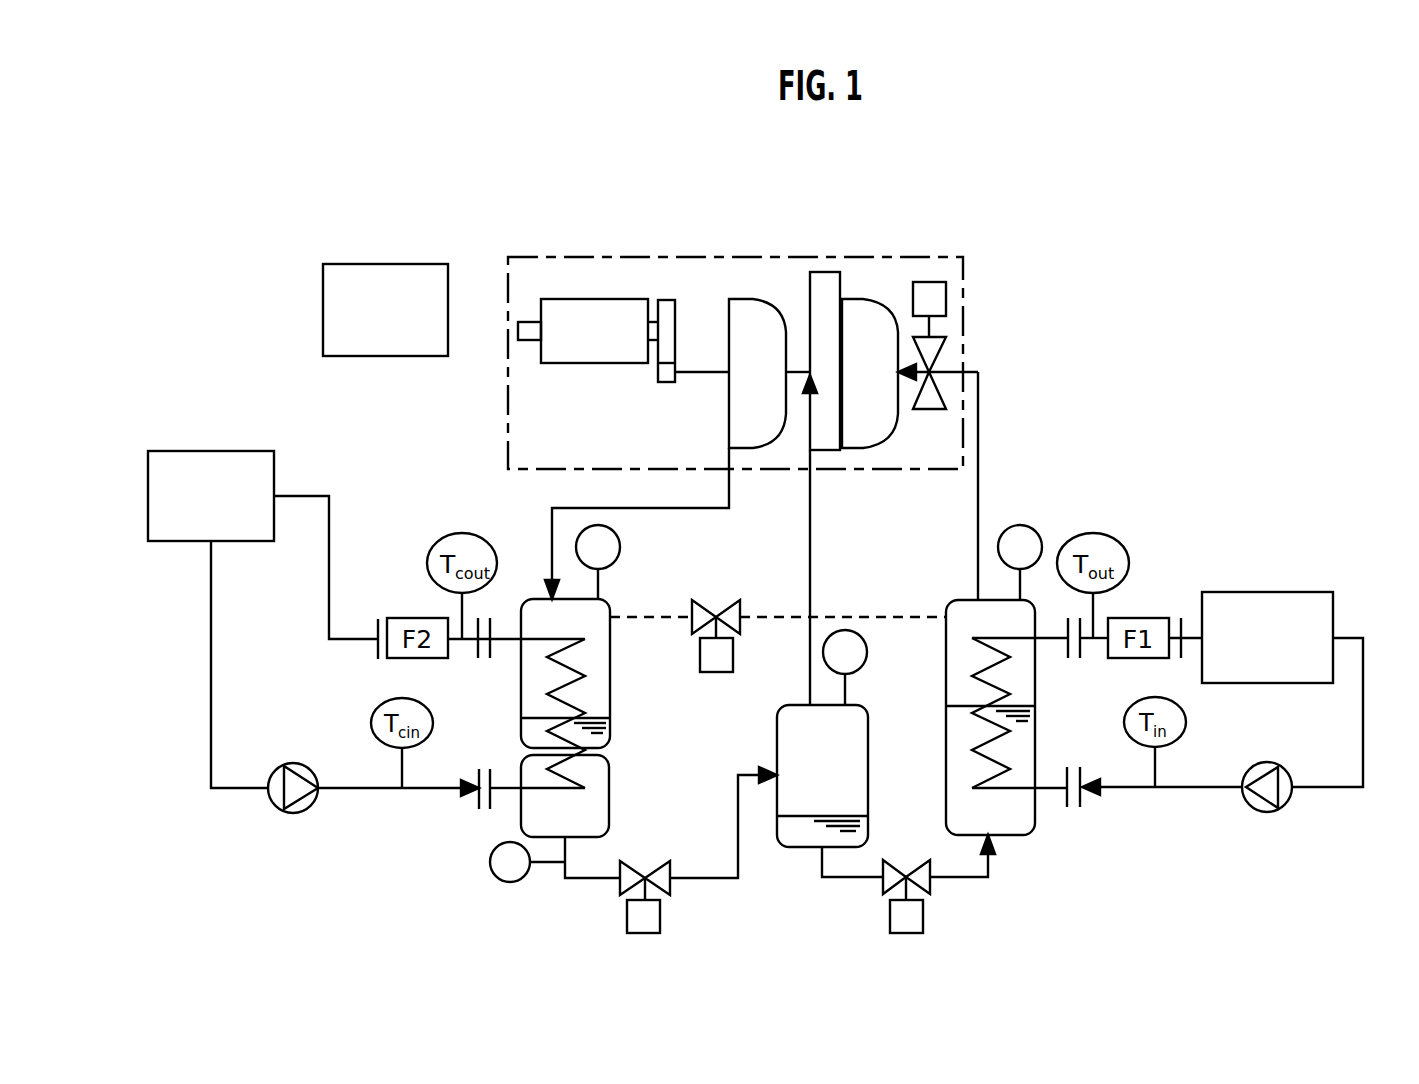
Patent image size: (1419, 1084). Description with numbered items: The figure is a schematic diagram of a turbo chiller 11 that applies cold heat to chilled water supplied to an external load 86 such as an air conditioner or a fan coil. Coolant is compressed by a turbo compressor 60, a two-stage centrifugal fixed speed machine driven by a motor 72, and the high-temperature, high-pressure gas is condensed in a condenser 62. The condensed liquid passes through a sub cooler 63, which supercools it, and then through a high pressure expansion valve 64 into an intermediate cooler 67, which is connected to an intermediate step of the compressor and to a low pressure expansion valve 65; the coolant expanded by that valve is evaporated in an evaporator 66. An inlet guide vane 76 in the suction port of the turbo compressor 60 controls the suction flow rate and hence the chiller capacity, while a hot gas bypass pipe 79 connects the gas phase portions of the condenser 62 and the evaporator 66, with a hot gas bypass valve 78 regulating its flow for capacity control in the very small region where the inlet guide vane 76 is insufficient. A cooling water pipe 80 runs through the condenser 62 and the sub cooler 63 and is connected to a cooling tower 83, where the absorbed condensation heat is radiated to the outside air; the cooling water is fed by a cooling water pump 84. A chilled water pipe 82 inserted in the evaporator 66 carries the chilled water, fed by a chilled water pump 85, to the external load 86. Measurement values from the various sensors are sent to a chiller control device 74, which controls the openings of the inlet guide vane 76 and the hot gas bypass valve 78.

The turbo chiller 11 is at (222, 262).
The turbo compressor 60 is at (996, 254).
The condenser 62 is at (533, 598).
The sub cooler 63 is at (609, 789).
The high pressure expansion valve 64 is at (670, 887).
The low pressure expansion valve 65 is at (932, 887).
The evaporator 66 is at (960, 600).
The intermediate cooler 67 is at (868, 762).
The electric motor 72 is at (572, 299).
The chiller control device 74 is at (371, 356).
The inlet guide vane 76 is at (929, 409).
The hot gas bypass valve 78 is at (717, 600).
The hot gas bypass pipe 79 is at (865, 616).
The cooling water pipe 80 is at (567, 700).
The chilled water pipe 82 is at (985, 670).
The cooling tower 83 is at (216, 448).
The cooling water pump 84 is at (290, 813).
The chilled water pump 85 is at (1260, 812).
The external load 86 is at (1253, 592).